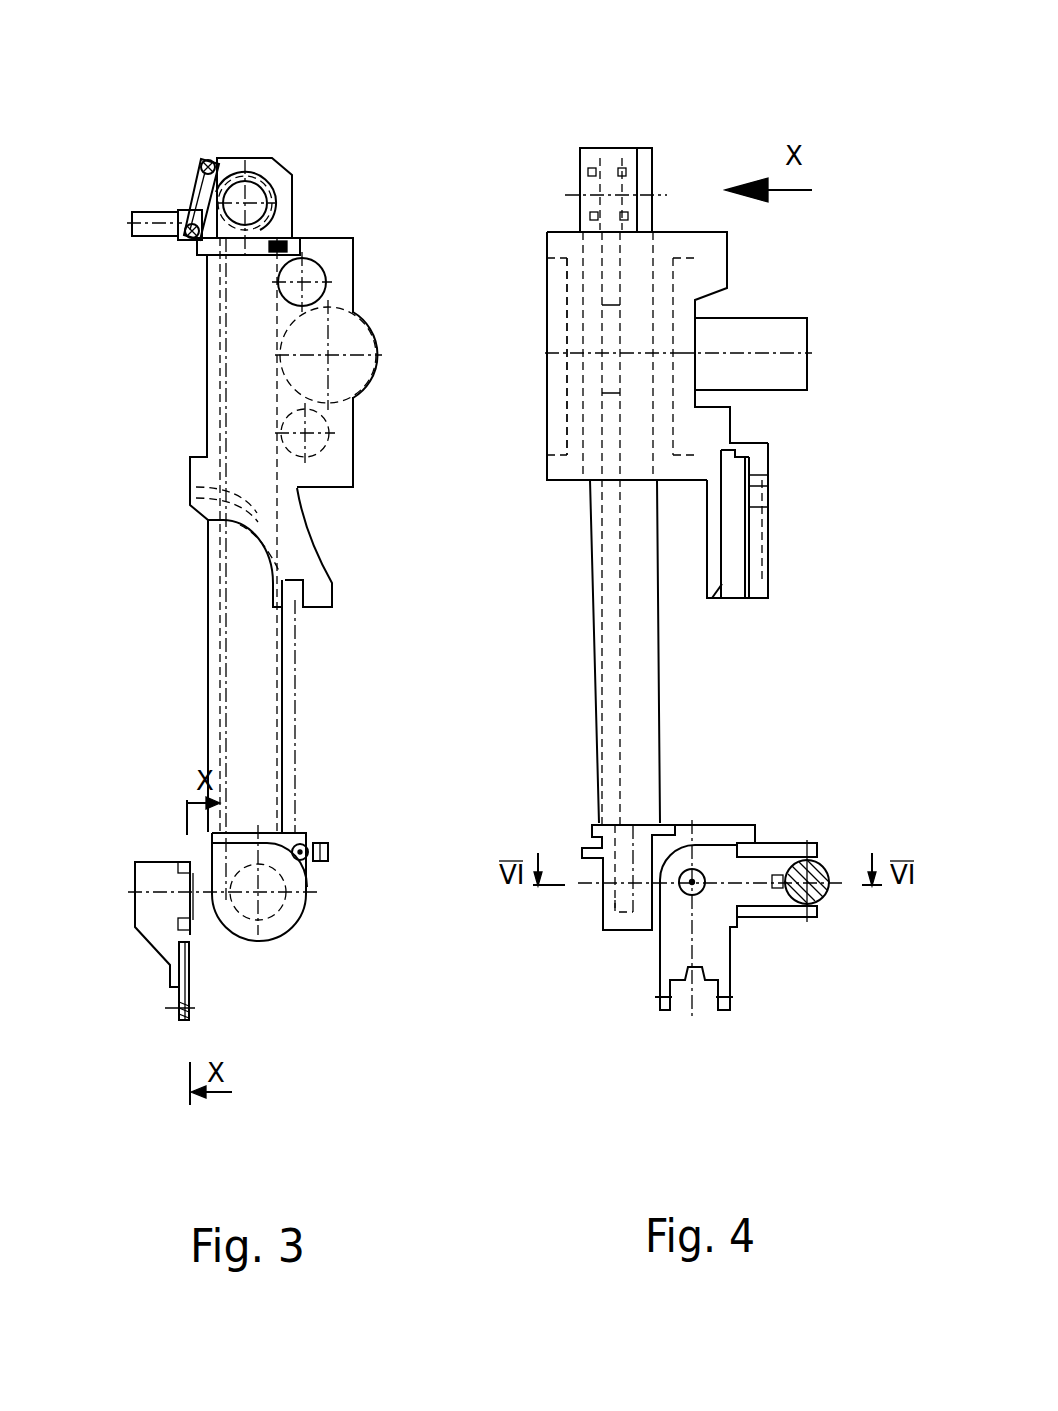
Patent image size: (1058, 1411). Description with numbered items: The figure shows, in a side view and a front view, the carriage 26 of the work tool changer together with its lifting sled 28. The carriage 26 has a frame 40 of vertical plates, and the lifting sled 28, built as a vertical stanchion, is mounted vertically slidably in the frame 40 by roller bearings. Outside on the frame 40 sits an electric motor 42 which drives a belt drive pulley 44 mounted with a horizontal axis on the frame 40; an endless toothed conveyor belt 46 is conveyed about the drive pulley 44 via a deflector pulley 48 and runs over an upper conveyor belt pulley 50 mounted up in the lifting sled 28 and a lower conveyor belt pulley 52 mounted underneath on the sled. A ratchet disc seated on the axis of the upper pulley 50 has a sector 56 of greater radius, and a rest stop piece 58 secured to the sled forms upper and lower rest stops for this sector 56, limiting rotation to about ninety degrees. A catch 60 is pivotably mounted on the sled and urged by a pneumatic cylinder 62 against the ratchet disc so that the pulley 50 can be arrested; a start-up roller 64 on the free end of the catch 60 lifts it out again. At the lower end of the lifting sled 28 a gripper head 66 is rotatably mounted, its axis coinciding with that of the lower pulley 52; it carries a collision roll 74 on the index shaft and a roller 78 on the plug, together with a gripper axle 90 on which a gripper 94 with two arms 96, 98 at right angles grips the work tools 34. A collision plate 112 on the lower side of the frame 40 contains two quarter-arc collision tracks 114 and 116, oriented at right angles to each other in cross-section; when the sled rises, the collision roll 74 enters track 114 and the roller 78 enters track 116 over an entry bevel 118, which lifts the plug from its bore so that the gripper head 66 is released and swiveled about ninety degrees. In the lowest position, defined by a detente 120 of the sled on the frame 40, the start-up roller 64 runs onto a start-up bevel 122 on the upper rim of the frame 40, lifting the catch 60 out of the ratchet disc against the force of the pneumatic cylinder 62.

In FIG. 3, the carriage 26 is at (352, 253).
In FIG. 4, the carriage 26 is at (553, 247).
In FIG. 3, the lifting sled 28 is at (262, 720).
In FIG. 4, the lifting sled 28 is at (605, 737).
In FIG. 4, the work tools 34 is at (815, 890).
In FIG. 3, the frame 40 is at (347, 427).
In FIG. 4, the frame 40 is at (580, 467).
In FIG. 4, the electric motor 42 is at (770, 372).
In FIG. 3, the belt drive pulley 44 is at (348, 372).
In FIG. 4, the belt drive pulley 44 is at (610, 342).
In FIG. 3, the endless toothed conveyor belt 46 is at (221, 413).
In FIG. 4, the endless toothed conveyor belt 46 is at (618, 547).
In FIG. 3, the deflector pulley 48 is at (312, 292).
In FIG. 3, the upper conveyor belt pulley 50 is at (258, 170).
In FIG. 4, the upper conveyor belt pulley 50 is at (608, 187).
In FIG. 3, the lower conveyor belt pulley 52 is at (272, 902).
In FIG. 4, the lower conveyor belt pulley 52 is at (623, 892).
In FIG. 3, the sector 56 is at (230, 170).
In FIG. 3, the rest stop piece 58 is at (250, 195).
In FIG. 3, the catch 60 is at (207, 160).
In FIG. 4, the catch 60 is at (645, 175).
In FIG. 3, the pneumatic cylinder 62 is at (150, 223).
In FIG. 3, the start-up roller 64 is at (185, 243).
In FIG. 3, the gripper head 66 is at (248, 929).
In FIG. 3, the collision roll 74 is at (307, 856).
In FIG. 3, the roller 78 is at (328, 852).
In FIG. 4, the gripper axle 90 is at (690, 886).
In FIG. 3, the gripper 94 is at (158, 937).
In FIG. 4, the gripper 94 is at (675, 870).
In FIG. 3, the arm 96 is at (191, 1020).
In FIG. 4, the arm 96 is at (682, 957).
In FIG. 4, the arm 98 is at (755, 893).
In FIG. 3, the collision plate 112 is at (318, 588).
In FIG. 4, the collision plate 112 is at (708, 525).
In FIG. 3, the collision track 114 is at (258, 515).
In FIG. 4, the collision track 114 is at (755, 548).
In FIG. 4, the collision track 116 is at (737, 563).
In FIG. 4, the entry bevel 118 is at (718, 591).
In FIG. 3, the detente 120 is at (280, 243).
In FIG. 3, the start-up bevel 122 is at (193, 240).